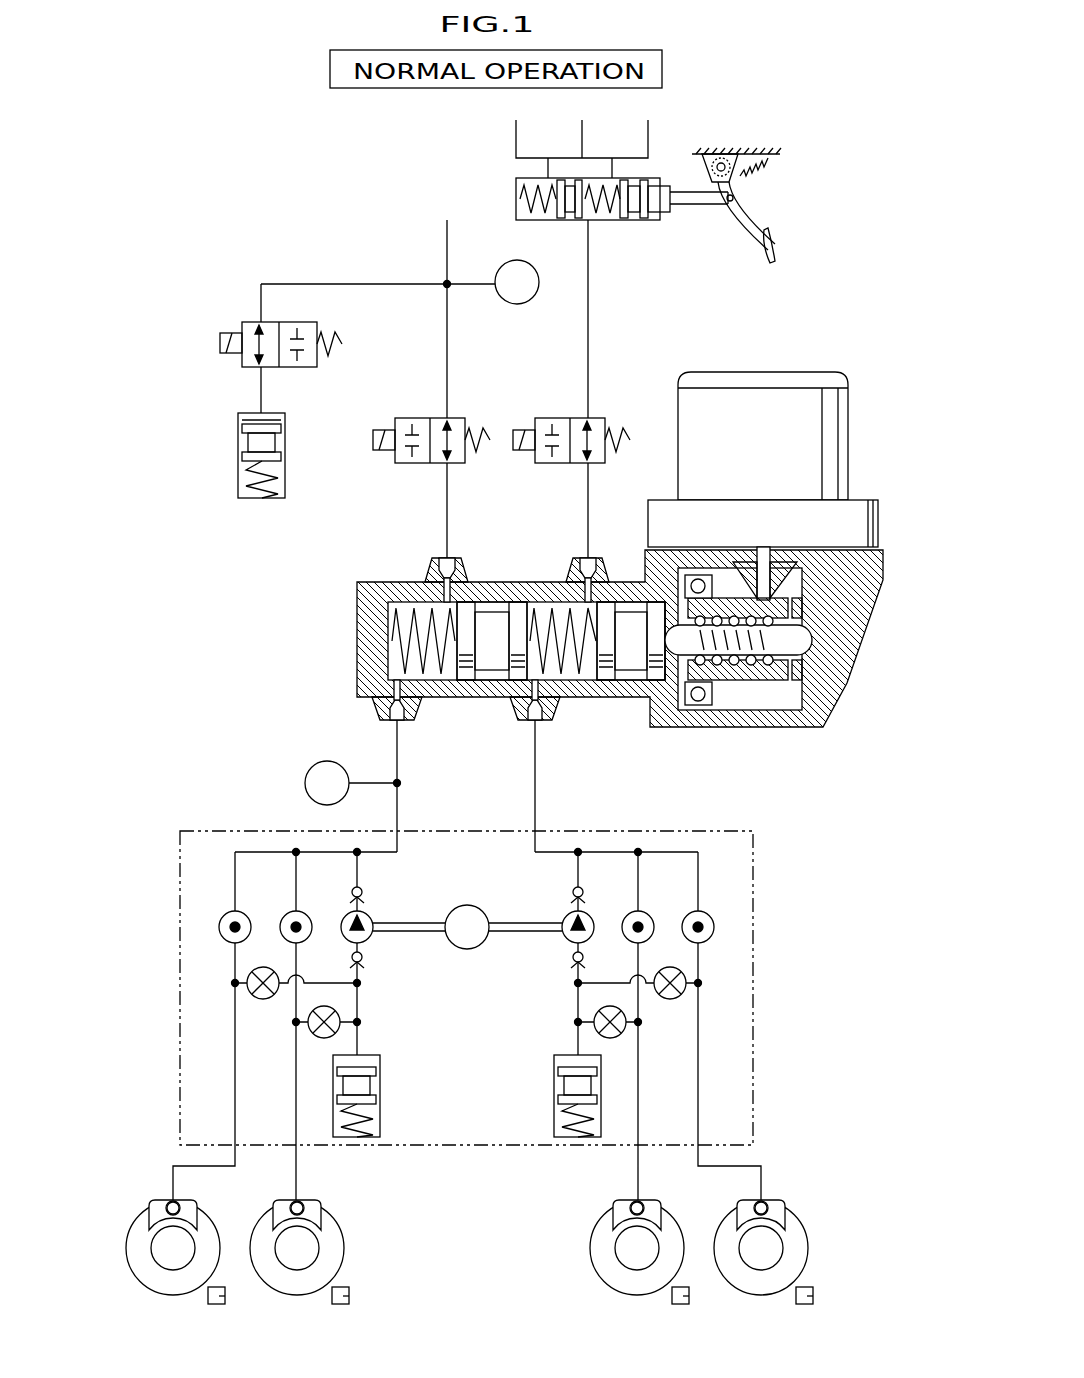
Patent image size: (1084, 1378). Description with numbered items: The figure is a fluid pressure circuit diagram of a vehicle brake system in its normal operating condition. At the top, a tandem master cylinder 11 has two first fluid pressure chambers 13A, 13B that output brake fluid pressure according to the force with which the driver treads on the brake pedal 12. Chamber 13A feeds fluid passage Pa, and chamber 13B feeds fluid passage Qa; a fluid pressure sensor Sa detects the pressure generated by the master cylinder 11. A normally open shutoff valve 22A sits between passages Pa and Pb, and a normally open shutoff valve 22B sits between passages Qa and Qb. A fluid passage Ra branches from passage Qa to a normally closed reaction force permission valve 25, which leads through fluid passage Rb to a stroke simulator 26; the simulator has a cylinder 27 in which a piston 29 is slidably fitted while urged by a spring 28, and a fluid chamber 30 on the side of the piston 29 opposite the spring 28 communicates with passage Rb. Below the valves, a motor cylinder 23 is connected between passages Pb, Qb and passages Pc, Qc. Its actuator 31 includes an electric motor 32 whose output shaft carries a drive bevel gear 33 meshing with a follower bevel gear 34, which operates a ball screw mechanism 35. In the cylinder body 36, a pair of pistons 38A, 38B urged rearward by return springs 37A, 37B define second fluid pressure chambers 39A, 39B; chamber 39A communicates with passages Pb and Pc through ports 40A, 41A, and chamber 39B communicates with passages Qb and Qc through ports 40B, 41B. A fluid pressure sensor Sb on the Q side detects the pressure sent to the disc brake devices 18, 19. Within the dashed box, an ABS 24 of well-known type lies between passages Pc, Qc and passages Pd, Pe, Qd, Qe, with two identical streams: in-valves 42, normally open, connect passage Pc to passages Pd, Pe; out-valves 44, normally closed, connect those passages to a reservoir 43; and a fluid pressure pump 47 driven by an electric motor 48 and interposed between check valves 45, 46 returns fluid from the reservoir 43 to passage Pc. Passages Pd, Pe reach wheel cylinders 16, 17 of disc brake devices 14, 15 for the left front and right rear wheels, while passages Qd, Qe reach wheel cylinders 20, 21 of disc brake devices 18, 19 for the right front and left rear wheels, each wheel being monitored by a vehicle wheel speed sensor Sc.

The tandem master cylinder 11 is at (551, 194).
The brake pedal 12 is at (778, 250).
The first fluid pressure chamber 13A is at (603, 216).
The first fluid pressure chamber 13B is at (542, 216).
The reaction force permission valve 25 is at (238, 328).
The stroke simulator 26 is at (285, 459).
The cylinder 27 is at (286, 480).
The spring 28 is at (268, 490).
The piston 29 is at (250, 442).
The fluid chamber 30 is at (272, 414).
The shutoff valve 22A is at (593, 414).
The shutoff valve 22B is at (452, 414).
The electric motor 32 is at (833, 470).
The drive bevel gear 33 is at (786, 558).
The motor cylinder 23 is at (608, 630).
The cylinder body 36 is at (524, 598).
The piston 38A is at (645, 605).
The piston 38B is at (493, 612).
The second fluid pressure chamber 39A is at (556, 608).
The second fluid pressure chamber 39B is at (405, 625).
The port 40A is at (591, 560).
The port 40B is at (448, 560).
The return spring 37A is at (578, 658).
The return spring 37B is at (437, 658).
The port 41A is at (533, 724).
The port 41B is at (394, 722).
The ball screw mechanism 35 is at (710, 692).
The follower bevel gear 34 is at (742, 688).
The actuator 31 is at (787, 696).
The ABS 24 is at (467, 994).
The in-valve 42 is at (226, 915).
The check valve 46 is at (366, 884).
The fluid pressure pump 47 is at (368, 915).
The electric motor 48 is at (470, 950).
The check valve 45 is at (366, 958).
The out-valve 44 is at (268, 1000).
The reservoir 43 is at (383, 1092).
The disc brake device 19 is at (126, 1222).
The wheel cylinder 21 is at (162, 1208).
The disc brake device 18 is at (346, 1236).
The wheel cylinder 20 is at (308, 1206).
The disc brake device 14 is at (590, 1238).
The wheel cylinder 16 is at (628, 1207).
The disc brake device 15 is at (810, 1232).
The wheel cylinder 17 is at (770, 1208).
The fluid passage Ra is at (350, 283).
The fluid passage Rb is at (258, 396).
The fluid passage Qa is at (445, 372).
The fluid passage Qb is at (449, 500).
The fluid passage Qc is at (399, 757).
The fluid passage Qd is at (298, 1150).
The fluid passage Qe is at (237, 1150).
The fluid passage Pa is at (590, 340).
The fluid passage Pb is at (590, 500).
The fluid passage Pc is at (537, 767).
The fluid passage Pd is at (637, 1150).
The fluid passage Pe is at (697, 1150).
The fluid pressure sensor Sa is at (517, 304).
The fluid pressure sensor Sb is at (305, 783).
The vehicle wheel speed sensor Sc is at (240, 1290).